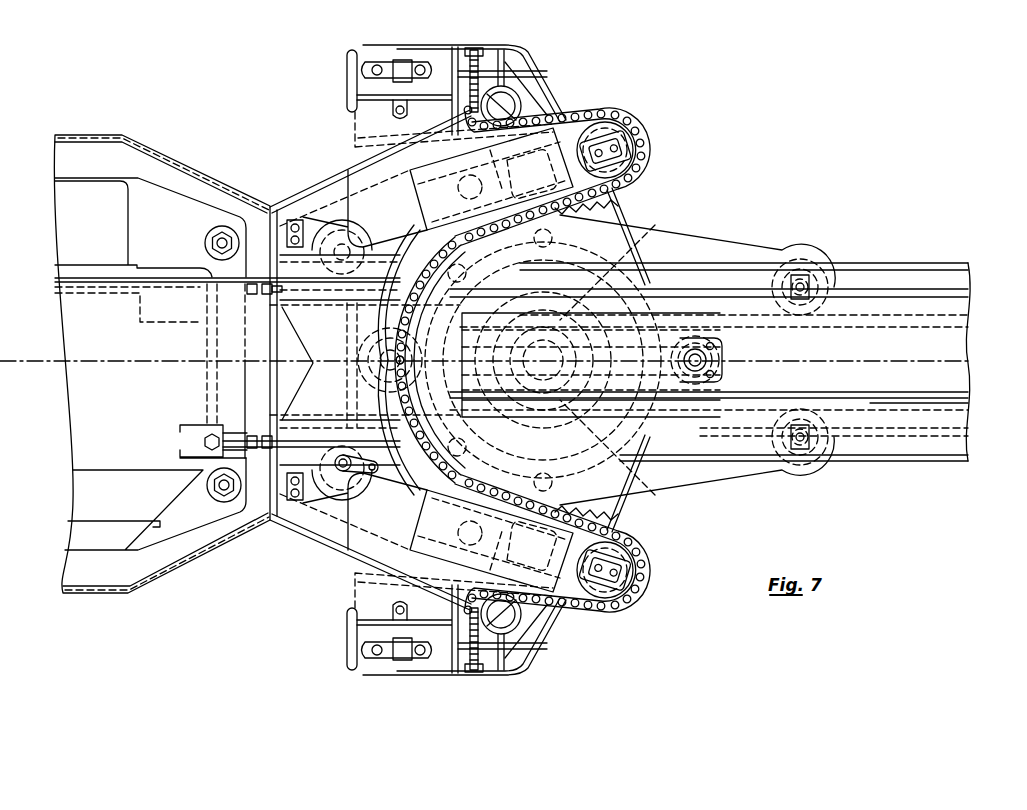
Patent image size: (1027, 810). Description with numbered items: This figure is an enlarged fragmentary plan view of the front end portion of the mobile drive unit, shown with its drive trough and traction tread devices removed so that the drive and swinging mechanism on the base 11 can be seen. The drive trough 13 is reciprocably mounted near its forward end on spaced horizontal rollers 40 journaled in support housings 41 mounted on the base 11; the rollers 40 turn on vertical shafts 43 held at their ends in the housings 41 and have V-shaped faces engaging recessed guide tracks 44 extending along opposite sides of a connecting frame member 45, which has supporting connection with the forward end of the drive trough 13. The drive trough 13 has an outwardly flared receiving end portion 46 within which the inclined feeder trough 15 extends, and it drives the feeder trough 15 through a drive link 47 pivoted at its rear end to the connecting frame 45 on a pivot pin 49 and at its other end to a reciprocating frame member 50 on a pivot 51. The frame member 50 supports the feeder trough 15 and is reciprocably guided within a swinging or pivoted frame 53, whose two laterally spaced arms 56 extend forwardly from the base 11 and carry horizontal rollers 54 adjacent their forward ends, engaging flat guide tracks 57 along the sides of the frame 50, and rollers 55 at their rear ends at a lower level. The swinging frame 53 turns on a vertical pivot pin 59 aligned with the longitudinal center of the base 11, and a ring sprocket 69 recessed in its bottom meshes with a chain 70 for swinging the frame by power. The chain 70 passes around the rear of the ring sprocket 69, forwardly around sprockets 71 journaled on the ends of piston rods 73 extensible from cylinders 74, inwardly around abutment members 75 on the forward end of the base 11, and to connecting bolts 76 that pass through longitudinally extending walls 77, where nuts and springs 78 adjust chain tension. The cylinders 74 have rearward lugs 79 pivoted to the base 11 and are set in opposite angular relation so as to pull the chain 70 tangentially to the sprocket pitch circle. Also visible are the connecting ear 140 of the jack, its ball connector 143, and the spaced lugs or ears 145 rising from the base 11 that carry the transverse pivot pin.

The base 11 is at (182, 165).
The drive trough 13 is at (152, 278).
The feeder trough 15 is at (875, 263).
The horizontal rollers 40 is at (380, 246).
The support housings 41 is at (378, 478).
The vertical shafts 43 is at (343, 472).
The guide tracks 44 is at (400, 252).
The connecting frame member 45 is at (290, 402).
The outwardly flared receiving end portion 46 is at (612, 215).
The drive link 47 is at (712, 376).
The pivot pin 49 is at (388, 386).
The reciprocating frame member 50 is at (935, 461).
The pivot 51 is at (712, 358).
The swinging or pivoted frame 53 is at (703, 487).
The horizontal rollers 54 is at (826, 275).
The horizontal rollers 55 is at (625, 242).
The arms 56 is at (800, 253).
The flat guide tracks 57 is at (870, 305).
The vertical pivot pin 59 is at (502, 388).
The ring sprocket 69 is at (620, 516).
The chain 70 is at (652, 561).
The sprockets 71 is at (613, 130).
The piston rods 73 is at (628, 150).
The cylinders 74 is at (372, 190).
The abutment members 75 is at (523, 106).
The connecting bolts 76 is at (500, 65).
The longitudinally extending walls 77 is at (522, 70).
The nuts and springs 78 is at (475, 50).
The lugs 79 is at (290, 222).
The connecting ear 140 is at (365, 72).
The ball connector 143 is at (400, 80).
The lugs or ears 145 is at (442, 45).